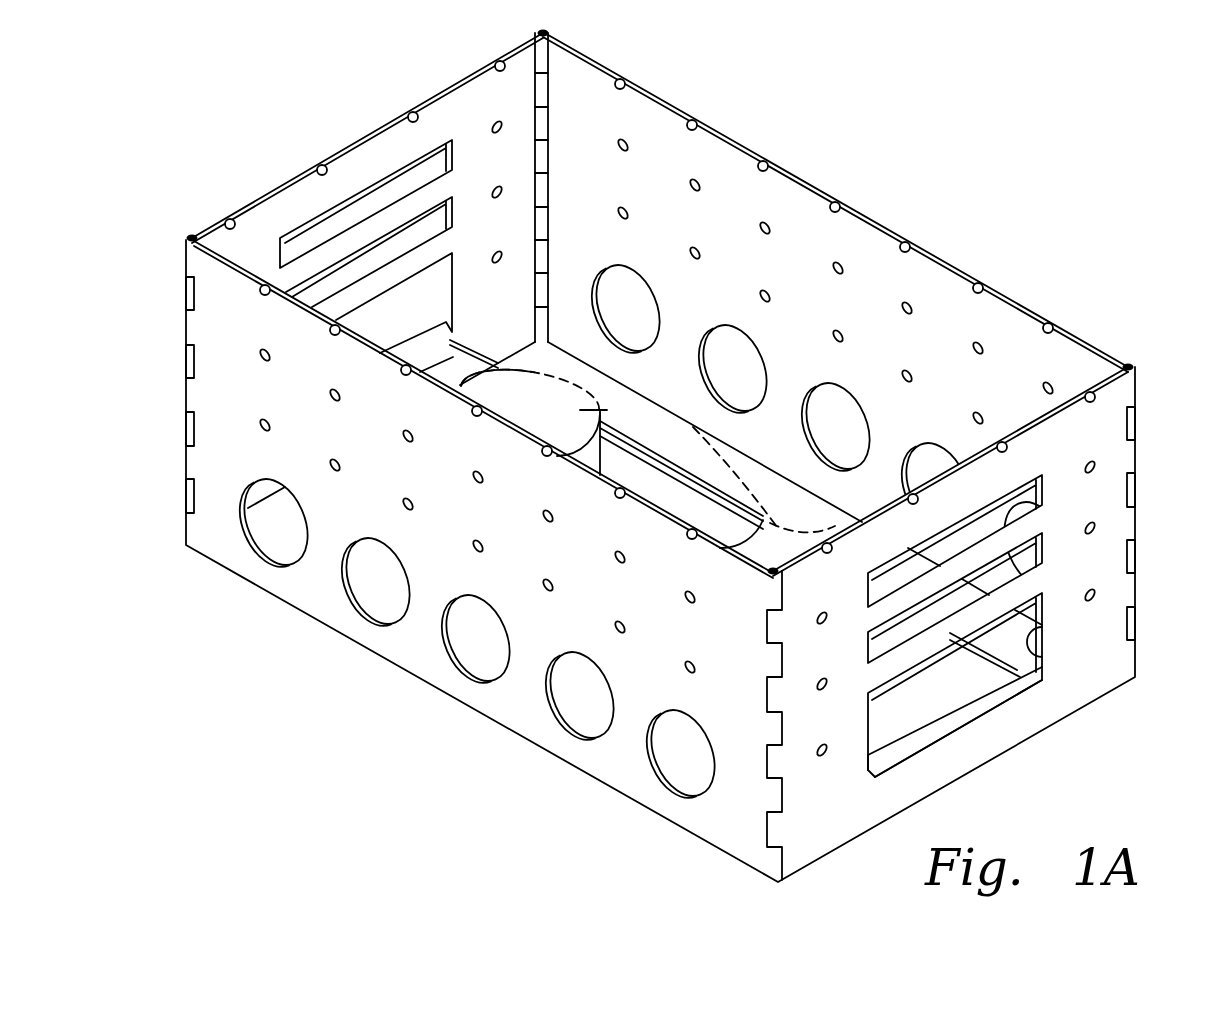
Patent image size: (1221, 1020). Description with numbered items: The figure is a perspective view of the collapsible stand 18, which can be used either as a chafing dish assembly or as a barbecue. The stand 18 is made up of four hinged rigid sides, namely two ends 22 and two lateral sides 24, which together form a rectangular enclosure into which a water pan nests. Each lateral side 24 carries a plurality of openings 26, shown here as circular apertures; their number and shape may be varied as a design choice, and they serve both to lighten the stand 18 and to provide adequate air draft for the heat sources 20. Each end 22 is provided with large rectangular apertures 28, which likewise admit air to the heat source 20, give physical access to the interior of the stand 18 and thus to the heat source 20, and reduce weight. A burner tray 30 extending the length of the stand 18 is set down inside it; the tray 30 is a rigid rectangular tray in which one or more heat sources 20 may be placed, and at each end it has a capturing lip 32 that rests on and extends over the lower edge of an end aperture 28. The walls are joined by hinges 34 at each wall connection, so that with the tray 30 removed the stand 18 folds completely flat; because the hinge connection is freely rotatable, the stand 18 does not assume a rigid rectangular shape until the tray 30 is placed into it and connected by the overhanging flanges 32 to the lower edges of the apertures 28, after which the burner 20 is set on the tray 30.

The collapsible stand 18 is at (660, 456).
The heat source 20 is at (648, 446).
The end 22 is at (698, 395).
The lateral side 24 is at (657, 394).
The opening 26 is at (654, 532).
The rectangular aperture 28 is at (749, 458).
The burner tray 30 is at (825, 587).
The capturing lip 32 is at (955, 741).
The hinge 34 is at (848, 199).